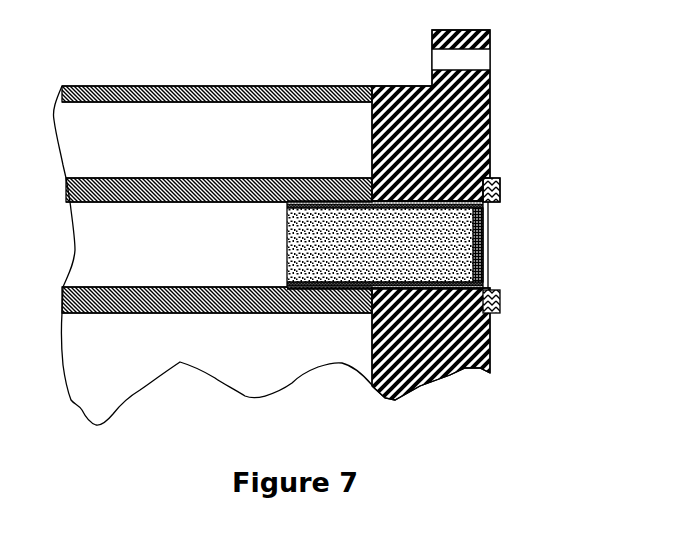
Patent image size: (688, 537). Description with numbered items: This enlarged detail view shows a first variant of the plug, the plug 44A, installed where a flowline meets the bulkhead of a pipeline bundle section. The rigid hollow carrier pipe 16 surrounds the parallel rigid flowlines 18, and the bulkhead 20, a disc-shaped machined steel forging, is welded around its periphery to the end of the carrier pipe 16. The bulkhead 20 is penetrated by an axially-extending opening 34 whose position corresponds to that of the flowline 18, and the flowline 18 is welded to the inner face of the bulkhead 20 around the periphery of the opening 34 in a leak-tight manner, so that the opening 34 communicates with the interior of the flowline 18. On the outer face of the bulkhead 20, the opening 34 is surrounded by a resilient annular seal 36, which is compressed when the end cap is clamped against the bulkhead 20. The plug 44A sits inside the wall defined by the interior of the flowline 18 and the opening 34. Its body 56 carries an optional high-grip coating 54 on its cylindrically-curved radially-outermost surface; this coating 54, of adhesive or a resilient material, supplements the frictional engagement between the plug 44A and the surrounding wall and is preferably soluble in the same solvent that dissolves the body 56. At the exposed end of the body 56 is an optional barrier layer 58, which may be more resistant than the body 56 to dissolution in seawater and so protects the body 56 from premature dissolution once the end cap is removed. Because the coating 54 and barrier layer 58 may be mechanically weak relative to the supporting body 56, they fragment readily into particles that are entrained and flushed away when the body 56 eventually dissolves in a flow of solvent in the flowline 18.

The carrier pipe 16 is at (207, 84).
The flowline 18 is at (193, 178).
The bulkhead 20 is at (455, 115).
The opening 34 is at (487, 220).
The seal 36 is at (500, 312).
The plug 44A is at (277, 250).
The high-grip coating 54 is at (298, 193).
The body 56 is at (375, 218).
The barrier layer 58 is at (482, 258).